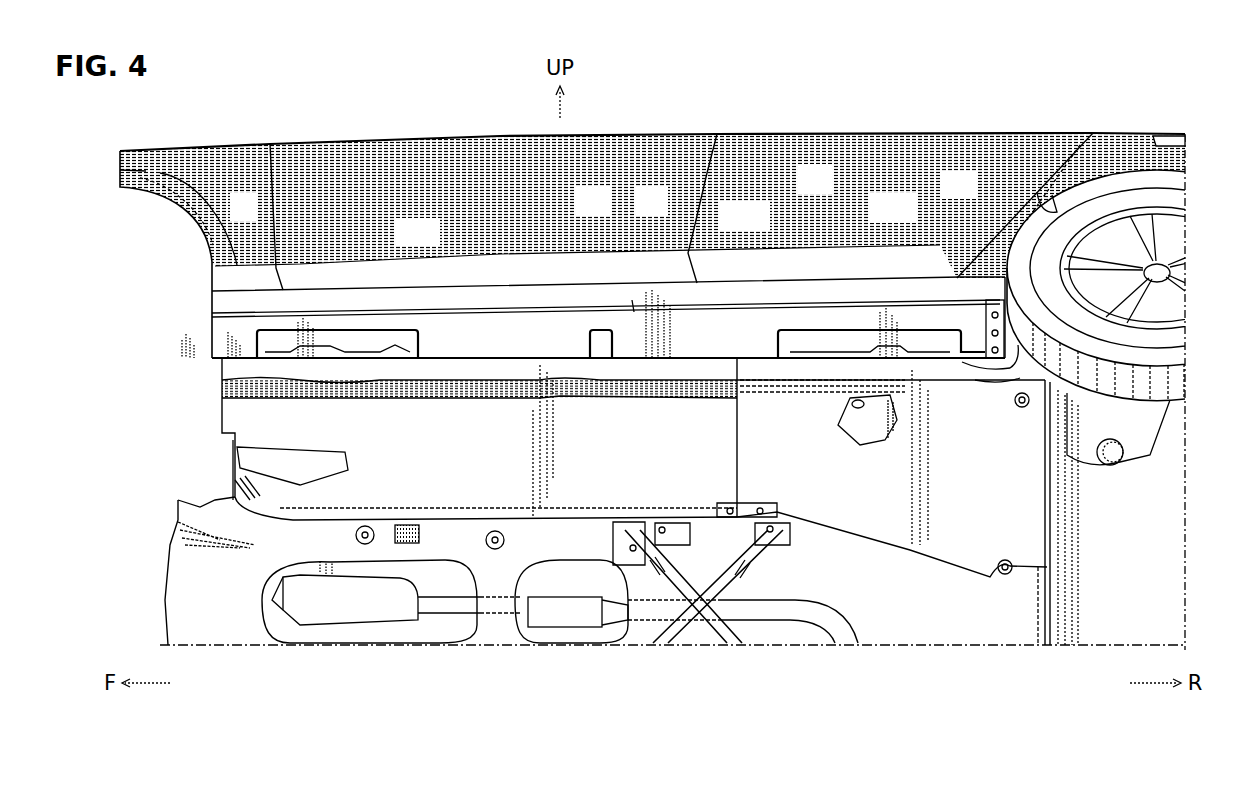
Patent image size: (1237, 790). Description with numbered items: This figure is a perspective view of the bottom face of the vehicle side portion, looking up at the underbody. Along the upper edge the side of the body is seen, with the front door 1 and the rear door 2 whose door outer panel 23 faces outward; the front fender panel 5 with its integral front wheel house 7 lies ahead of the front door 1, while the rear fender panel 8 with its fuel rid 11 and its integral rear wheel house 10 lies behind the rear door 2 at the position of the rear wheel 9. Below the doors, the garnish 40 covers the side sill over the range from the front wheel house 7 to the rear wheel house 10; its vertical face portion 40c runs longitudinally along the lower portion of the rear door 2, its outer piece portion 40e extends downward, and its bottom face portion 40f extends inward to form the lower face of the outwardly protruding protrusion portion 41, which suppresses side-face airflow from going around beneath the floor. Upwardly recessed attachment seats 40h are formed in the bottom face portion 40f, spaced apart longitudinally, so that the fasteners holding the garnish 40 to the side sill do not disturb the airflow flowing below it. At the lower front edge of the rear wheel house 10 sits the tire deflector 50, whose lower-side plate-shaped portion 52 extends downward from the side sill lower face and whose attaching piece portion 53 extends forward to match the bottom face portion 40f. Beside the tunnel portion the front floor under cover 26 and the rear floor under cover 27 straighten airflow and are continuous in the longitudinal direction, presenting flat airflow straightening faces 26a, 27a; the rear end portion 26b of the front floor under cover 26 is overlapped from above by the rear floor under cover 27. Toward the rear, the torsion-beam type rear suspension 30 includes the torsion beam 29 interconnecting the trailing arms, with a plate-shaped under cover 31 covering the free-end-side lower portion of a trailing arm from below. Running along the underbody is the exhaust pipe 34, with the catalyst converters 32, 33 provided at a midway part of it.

The front door 1 is at (411, 136).
The rear door 2 is at (930, 134).
The front fender panel 5 is at (205, 156).
The front wheel house 7 is at (185, 228).
The rear fender panel 8 is at (1118, 150).
The rear wheel 9 is at (1175, 378).
The rear wheel house 10 is at (1010, 193).
The fuel rid 11 is at (1170, 141).
The door outer panel 23 is at (880, 176).
The front floor under cover 26 is at (490, 350).
The airflow straightening face 26a is at (425, 464).
The rear end portion 26b is at (737, 428).
The rear floor under cover 27 is at (812, 345).
The airflow straightening face 27a is at (770, 467).
The torsion beam 29 is at (1080, 553).
The rear suspension 30 is at (1100, 573).
The under cover 31 is at (1128, 434).
The catalyst converter 32 is at (343, 615).
The catalyst converter 33 is at (553, 622).
The exhaust pipe 34 is at (797, 598).
The garnish 40 is at (605, 280).
The vertical face portion 40c is at (886, 288).
The outer piece portion 40e is at (738, 292).
The bottom face portion 40f is at (433, 290).
The attachment seat 40h is at (353, 342).
The protrusion portion 41 is at (633, 300).
The tire deflector 50 is at (998, 307).
The lower-side plate-shaped portion 52 is at (1006, 372).
The attaching piece portion 53 is at (982, 352).